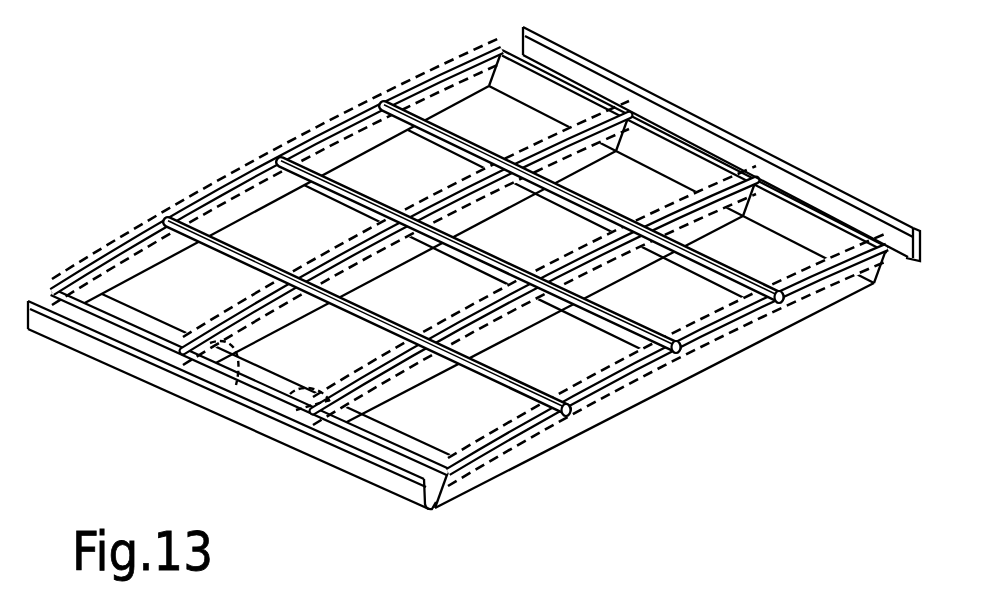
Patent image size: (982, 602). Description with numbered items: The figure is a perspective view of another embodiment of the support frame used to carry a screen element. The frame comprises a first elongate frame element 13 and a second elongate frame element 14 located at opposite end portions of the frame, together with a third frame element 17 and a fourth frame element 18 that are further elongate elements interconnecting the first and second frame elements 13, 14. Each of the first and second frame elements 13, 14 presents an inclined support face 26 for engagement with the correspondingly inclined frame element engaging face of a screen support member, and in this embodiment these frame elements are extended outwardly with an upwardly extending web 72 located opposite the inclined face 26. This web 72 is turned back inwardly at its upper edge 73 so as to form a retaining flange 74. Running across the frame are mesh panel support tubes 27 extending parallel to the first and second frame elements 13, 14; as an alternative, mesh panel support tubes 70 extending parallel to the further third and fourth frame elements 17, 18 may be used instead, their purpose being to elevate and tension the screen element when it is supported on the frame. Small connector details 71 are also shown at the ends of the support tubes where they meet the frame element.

The first elongate frame element 13 is at (458, 492).
The second elongate frame element 14 is at (518, 44).
The third frame element 17 is at (707, 360).
The fourth frame element 18 is at (115, 272).
The inclined support face 26 is at (430, 497).
The mesh panel support tube 27 is at (297, 168).
The mesh panel support tube 70 is at (293, 402).
The rivet 71 is at (785, 303).
The upwardly extending web 72 is at (307, 453).
The upper edge 73 is at (392, 463).
The retaining flange 74 is at (915, 270).